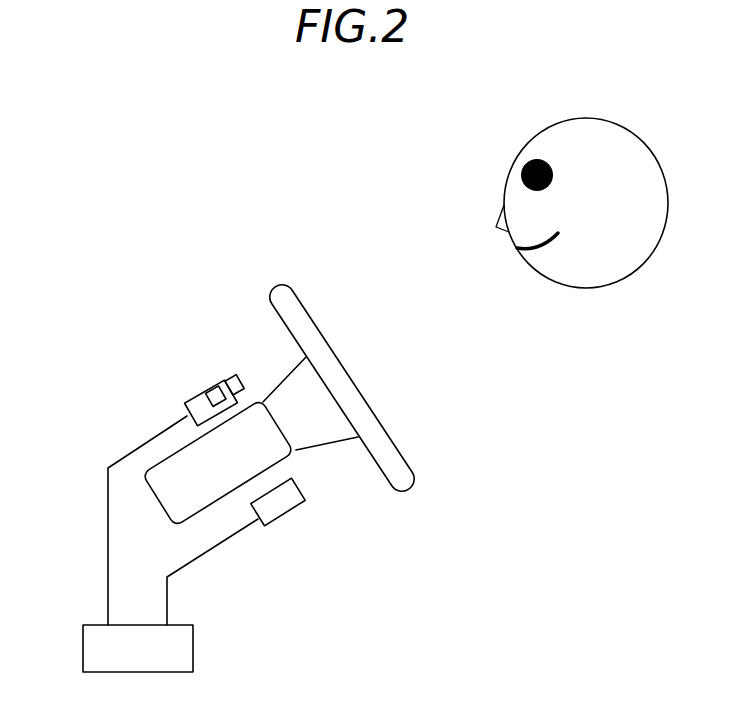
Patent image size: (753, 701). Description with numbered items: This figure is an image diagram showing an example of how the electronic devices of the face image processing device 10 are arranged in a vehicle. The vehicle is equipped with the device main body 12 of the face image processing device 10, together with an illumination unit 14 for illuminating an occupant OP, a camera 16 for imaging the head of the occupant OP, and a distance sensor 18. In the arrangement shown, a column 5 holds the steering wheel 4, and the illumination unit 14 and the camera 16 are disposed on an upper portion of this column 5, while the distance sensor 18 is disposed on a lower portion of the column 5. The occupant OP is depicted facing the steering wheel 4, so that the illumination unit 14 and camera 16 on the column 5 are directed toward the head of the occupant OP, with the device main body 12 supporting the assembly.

The face image processing device 10 is at (186, 498).
The device main body 12 is at (195, 635).
The column 5 is at (171, 521).
The illumination unit 14 is at (188, 376).
The camera 16 is at (205, 392).
The distance sensor 18 is at (288, 513).
The steering wheel 4 is at (410, 490).
The occupant OP is at (650, 128).